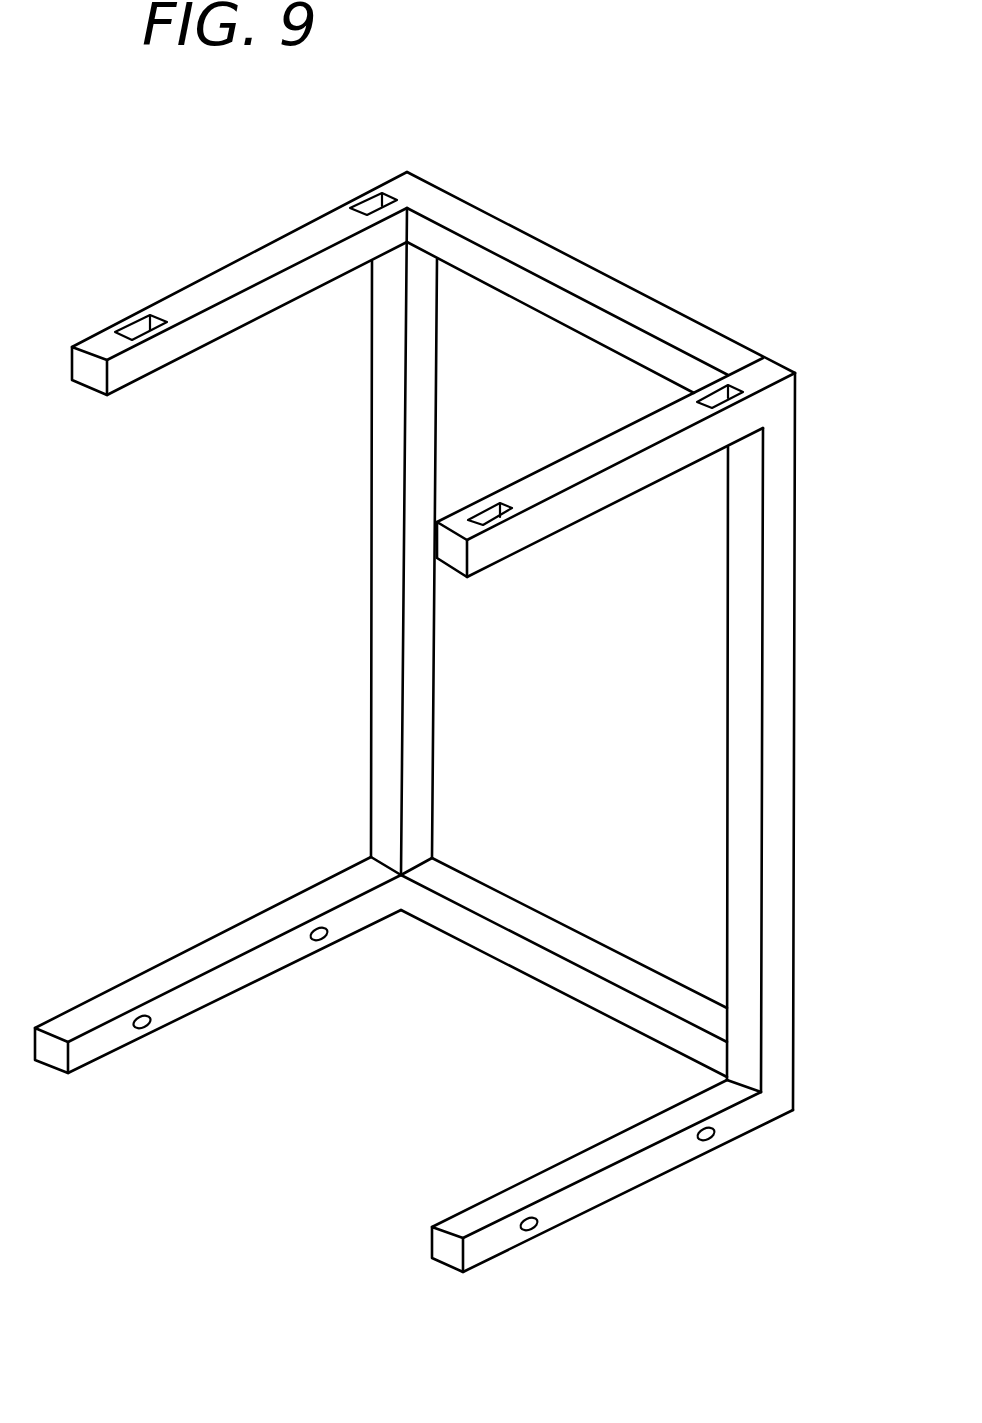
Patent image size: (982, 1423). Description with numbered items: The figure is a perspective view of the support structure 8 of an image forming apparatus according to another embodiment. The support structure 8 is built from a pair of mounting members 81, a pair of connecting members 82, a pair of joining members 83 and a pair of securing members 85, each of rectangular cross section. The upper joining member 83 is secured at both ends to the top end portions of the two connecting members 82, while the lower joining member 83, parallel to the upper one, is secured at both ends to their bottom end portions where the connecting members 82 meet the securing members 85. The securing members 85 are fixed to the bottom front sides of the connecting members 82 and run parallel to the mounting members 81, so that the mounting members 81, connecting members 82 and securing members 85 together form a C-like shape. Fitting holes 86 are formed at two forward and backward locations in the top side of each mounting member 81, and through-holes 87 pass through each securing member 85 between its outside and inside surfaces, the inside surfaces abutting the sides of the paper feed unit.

The support structure 8 is at (749, 235).
The mounting member 81 is at (197, 352).
The connecting member 82 is at (372, 490).
The joining member 83 is at (612, 275).
The securing member 85 is at (255, 912).
The fitting hole 86 is at (368, 196).
The through-hole 87 is at (327, 940).